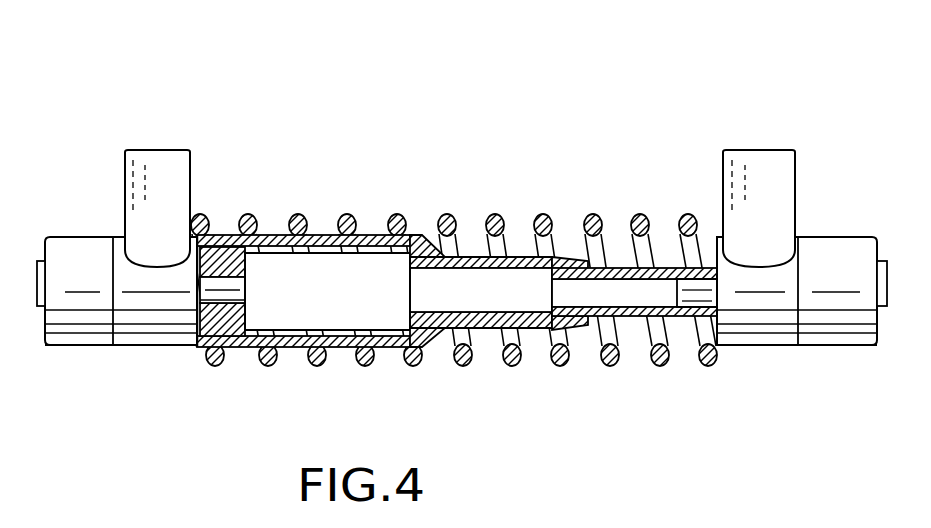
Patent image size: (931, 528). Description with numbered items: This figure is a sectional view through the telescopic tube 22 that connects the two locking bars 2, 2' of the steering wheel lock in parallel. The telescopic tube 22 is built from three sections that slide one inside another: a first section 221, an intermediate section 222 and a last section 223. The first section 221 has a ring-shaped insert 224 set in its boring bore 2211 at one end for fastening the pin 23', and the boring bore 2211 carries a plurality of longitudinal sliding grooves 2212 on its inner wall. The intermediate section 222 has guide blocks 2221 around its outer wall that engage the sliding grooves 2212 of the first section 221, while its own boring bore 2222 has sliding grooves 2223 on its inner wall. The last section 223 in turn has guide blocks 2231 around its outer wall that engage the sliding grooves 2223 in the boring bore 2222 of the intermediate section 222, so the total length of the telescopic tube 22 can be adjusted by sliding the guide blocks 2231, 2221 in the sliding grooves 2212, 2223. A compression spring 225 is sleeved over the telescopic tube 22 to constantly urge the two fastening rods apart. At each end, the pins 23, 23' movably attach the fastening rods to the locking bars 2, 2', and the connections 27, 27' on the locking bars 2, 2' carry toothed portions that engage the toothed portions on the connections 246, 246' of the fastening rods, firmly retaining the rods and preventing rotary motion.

The telescopic tube 22 is at (454, 199).
The first section 221 is at (330, 235).
The sliding grooves 2212 is at (272, 237).
The boring bore 2211 is at (295, 310).
The ring-shaped insert 224 is at (233, 348).
The compression spring 225 is at (414, 366).
The intermediate section 222 is at (477, 243).
The guide blocks 2221 is at (423, 237).
The boring bore 2222 is at (489, 305).
The sliding grooves 2223 is at (517, 257).
The guide blocks 2231 is at (573, 332).
The last section 223 is at (623, 265).
The locking bar 2 is at (777, 177).
The locking bar 2' is at (175, 188).
The connection 27 is at (797, 256).
The connection 27' is at (121, 219).
The pin 23 is at (887, 223).
The pin 23' is at (47, 228).
The connection 246 is at (797, 378).
The connection 246' is at (121, 379).